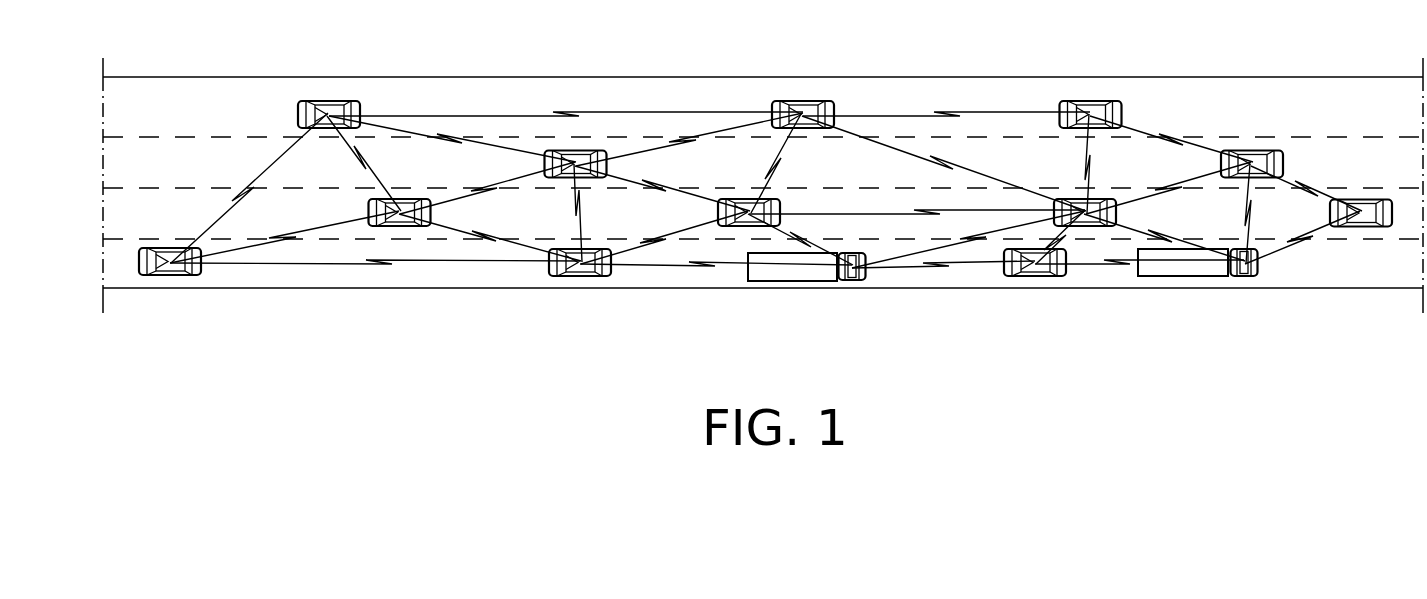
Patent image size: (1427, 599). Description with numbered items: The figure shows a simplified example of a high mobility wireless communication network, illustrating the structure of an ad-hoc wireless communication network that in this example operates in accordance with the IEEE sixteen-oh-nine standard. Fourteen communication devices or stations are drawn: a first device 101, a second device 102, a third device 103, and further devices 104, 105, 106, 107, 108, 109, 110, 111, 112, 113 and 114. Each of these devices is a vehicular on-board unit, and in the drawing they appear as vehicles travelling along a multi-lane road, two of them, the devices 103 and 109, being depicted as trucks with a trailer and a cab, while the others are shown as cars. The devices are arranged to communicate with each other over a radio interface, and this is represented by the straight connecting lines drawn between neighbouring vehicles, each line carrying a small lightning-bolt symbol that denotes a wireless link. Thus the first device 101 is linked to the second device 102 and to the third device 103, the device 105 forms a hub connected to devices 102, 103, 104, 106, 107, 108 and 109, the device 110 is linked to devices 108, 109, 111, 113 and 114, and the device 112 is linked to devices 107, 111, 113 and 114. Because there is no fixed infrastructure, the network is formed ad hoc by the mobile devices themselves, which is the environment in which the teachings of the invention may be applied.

The first device 101 is at (1380, 222).
The second device 102 is at (1283, 161).
The third device 103 is at (1248, 277).
The communication device 104 is at (1027, 265).
The communication device 105 is at (1116, 214).
The communication device 106 is at (1113, 103).
The communication device 107 is at (825, 103).
The communication device 108 is at (718, 211).
The communication device 109 is at (802, 270).
The communication device 110 is at (600, 268).
The communication device 111 is at (607, 163).
The communication device 112 is at (303, 103).
The communication device 113 is at (369, 211).
The communication device 114 is at (140, 272).